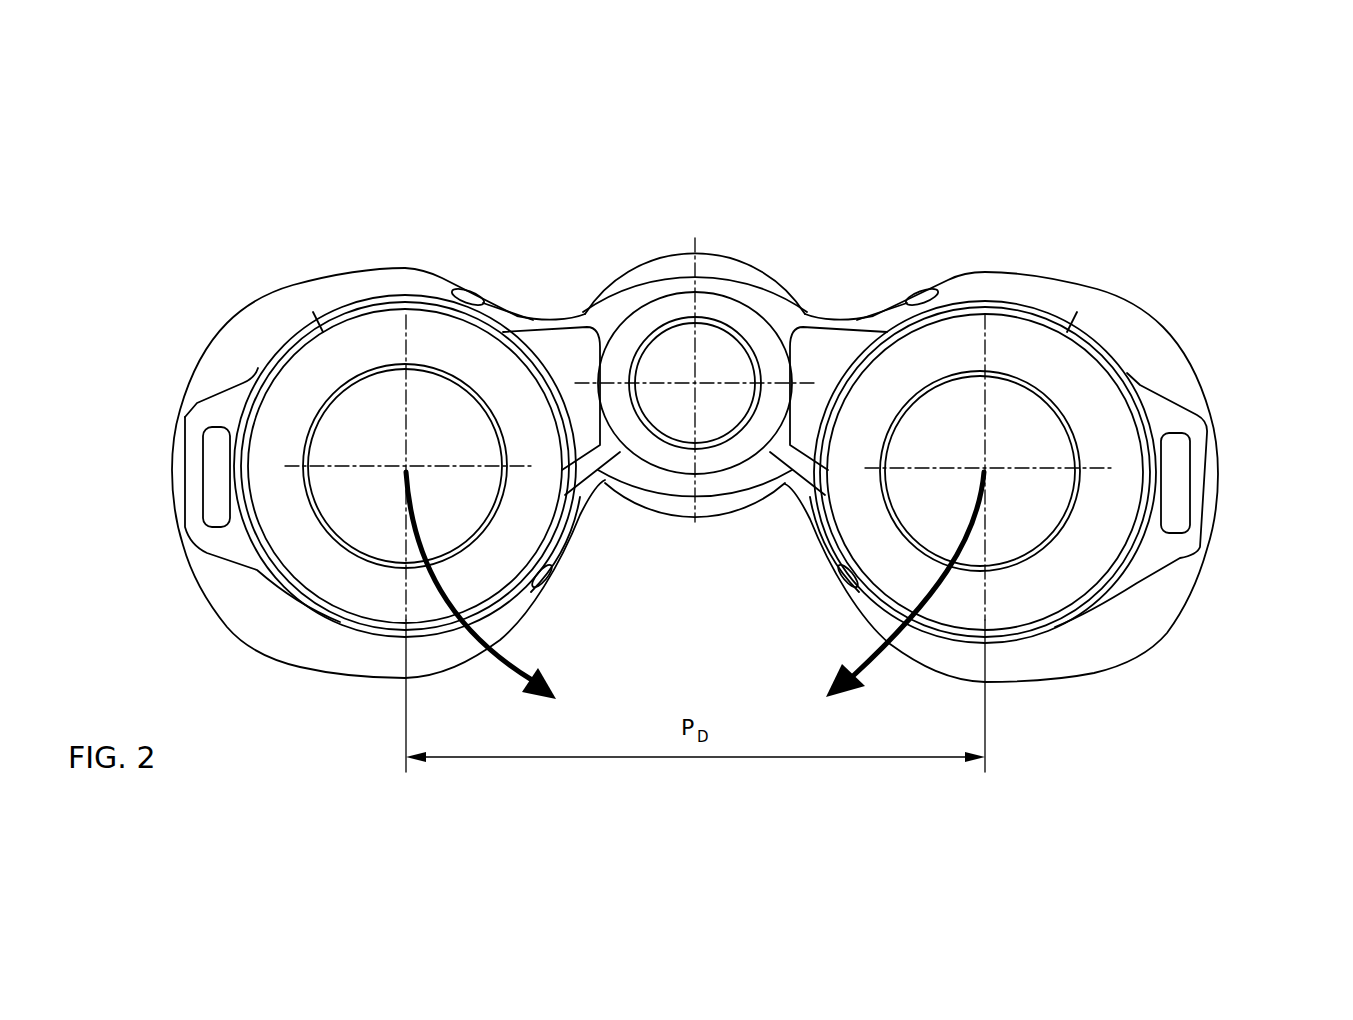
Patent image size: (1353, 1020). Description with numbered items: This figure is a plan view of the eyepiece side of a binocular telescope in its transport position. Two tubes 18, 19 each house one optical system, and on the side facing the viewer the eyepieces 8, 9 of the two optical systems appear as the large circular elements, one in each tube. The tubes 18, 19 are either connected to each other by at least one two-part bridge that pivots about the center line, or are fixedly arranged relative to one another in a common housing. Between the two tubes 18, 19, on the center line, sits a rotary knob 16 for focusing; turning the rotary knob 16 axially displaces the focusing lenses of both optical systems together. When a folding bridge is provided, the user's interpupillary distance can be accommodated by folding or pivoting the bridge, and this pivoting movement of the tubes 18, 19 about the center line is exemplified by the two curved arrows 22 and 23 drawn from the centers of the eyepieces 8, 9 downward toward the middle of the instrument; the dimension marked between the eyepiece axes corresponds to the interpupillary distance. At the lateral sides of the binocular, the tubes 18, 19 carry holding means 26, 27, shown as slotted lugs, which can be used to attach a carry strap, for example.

The eyepiece 8 is at (1029, 337).
The eyepiece 9 is at (376, 333).
The rotary knob 16 is at (750, 275).
The tube 18 is at (1140, 338).
The tube 19 is at (250, 335).
The arrow 22 is at (505, 660).
The arrow 23 is at (873, 668).
The holding means 26 is at (227, 535).
The holding means 27 is at (1200, 497).